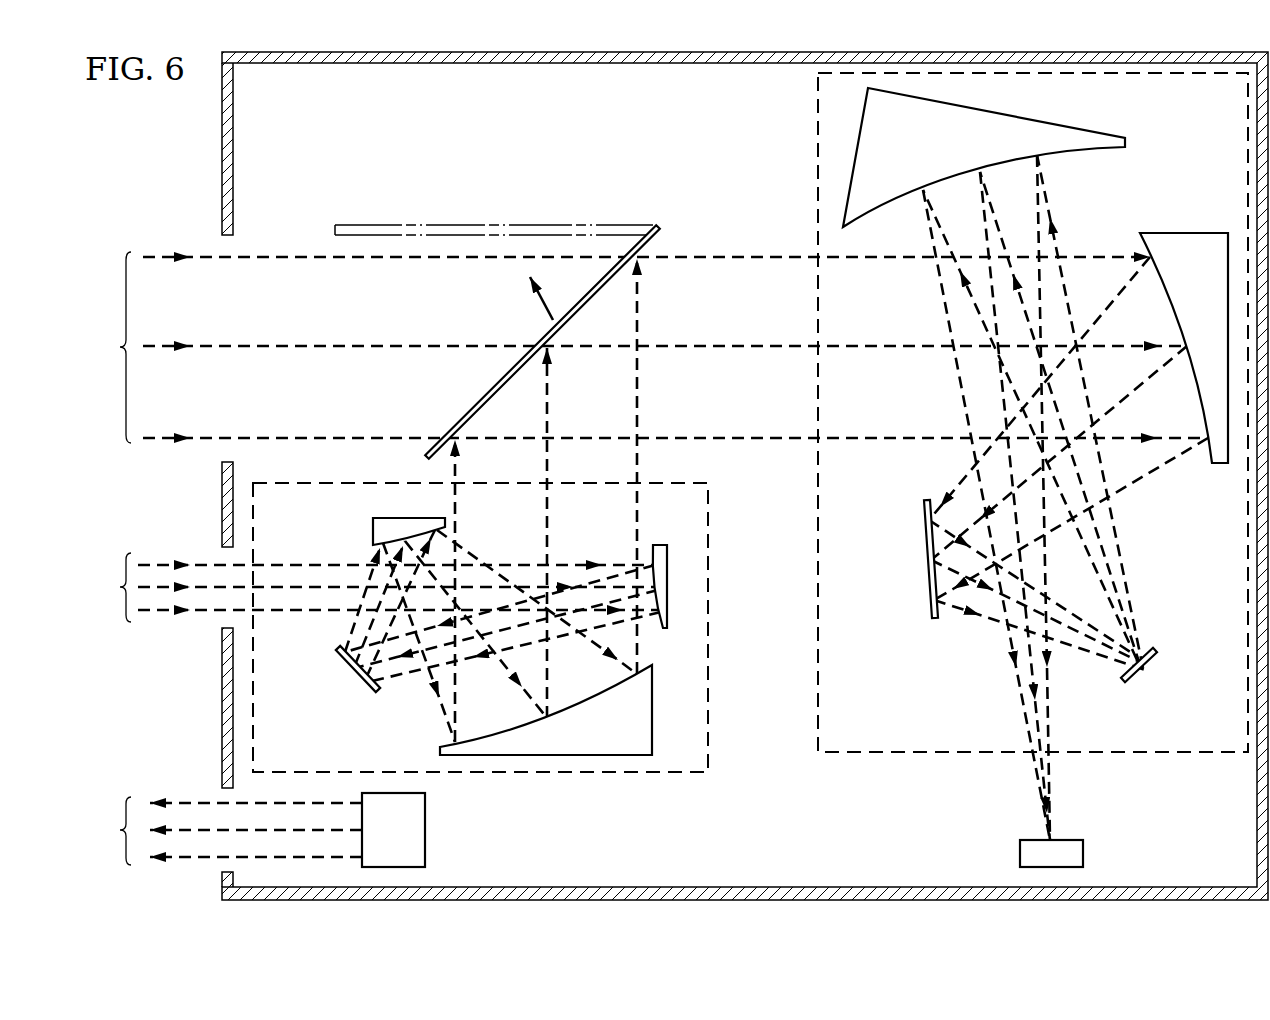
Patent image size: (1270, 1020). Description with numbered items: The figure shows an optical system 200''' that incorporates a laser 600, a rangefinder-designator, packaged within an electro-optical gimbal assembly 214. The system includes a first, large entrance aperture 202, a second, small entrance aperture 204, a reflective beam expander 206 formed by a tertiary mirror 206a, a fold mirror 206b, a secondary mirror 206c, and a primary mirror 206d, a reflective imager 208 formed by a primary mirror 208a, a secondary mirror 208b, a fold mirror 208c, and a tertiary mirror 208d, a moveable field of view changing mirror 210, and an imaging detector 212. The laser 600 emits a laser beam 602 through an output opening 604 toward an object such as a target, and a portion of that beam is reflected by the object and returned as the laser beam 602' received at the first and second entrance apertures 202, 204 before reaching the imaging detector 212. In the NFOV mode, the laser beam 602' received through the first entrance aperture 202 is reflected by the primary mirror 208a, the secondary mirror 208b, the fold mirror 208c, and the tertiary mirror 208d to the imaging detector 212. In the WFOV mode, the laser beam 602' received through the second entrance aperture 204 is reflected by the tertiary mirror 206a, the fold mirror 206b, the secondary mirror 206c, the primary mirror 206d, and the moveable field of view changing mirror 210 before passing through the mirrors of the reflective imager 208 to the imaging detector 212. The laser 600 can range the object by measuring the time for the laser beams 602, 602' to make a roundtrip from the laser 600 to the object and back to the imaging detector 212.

The optical system 200''' is at (684, 476).
The first entrance aperture 202 is at (221, 239).
The second entrance aperture 204 is at (222, 623).
The reflective beam expander 206 is at (525, 515).
The tertiary mirror 206a is at (660, 546).
The fold mirror 206b is at (350, 667).
The secondary mirror 206c is at (372, 532).
The primary mirror 206d is at (636, 738).
The reflective imager 208 is at (993, 456).
The primary mirror 208a is at (1190, 233).
The secondary mirror 208b is at (927, 585).
The fold mirror 208c is at (1150, 672).
The tertiary mirror 208d is at (946, 153).
The moveable field of view changing mirror 210 is at (455, 226).
The imaging detector 212 is at (1084, 853).
The electro-optical gimbal assembly 214 is at (222, 722).
The laser 600 is at (426, 843).
The laser beam 602 is at (218, 831).
The reflected laser beam 602' is at (640, 437).
The output opening 604 is at (222, 873).